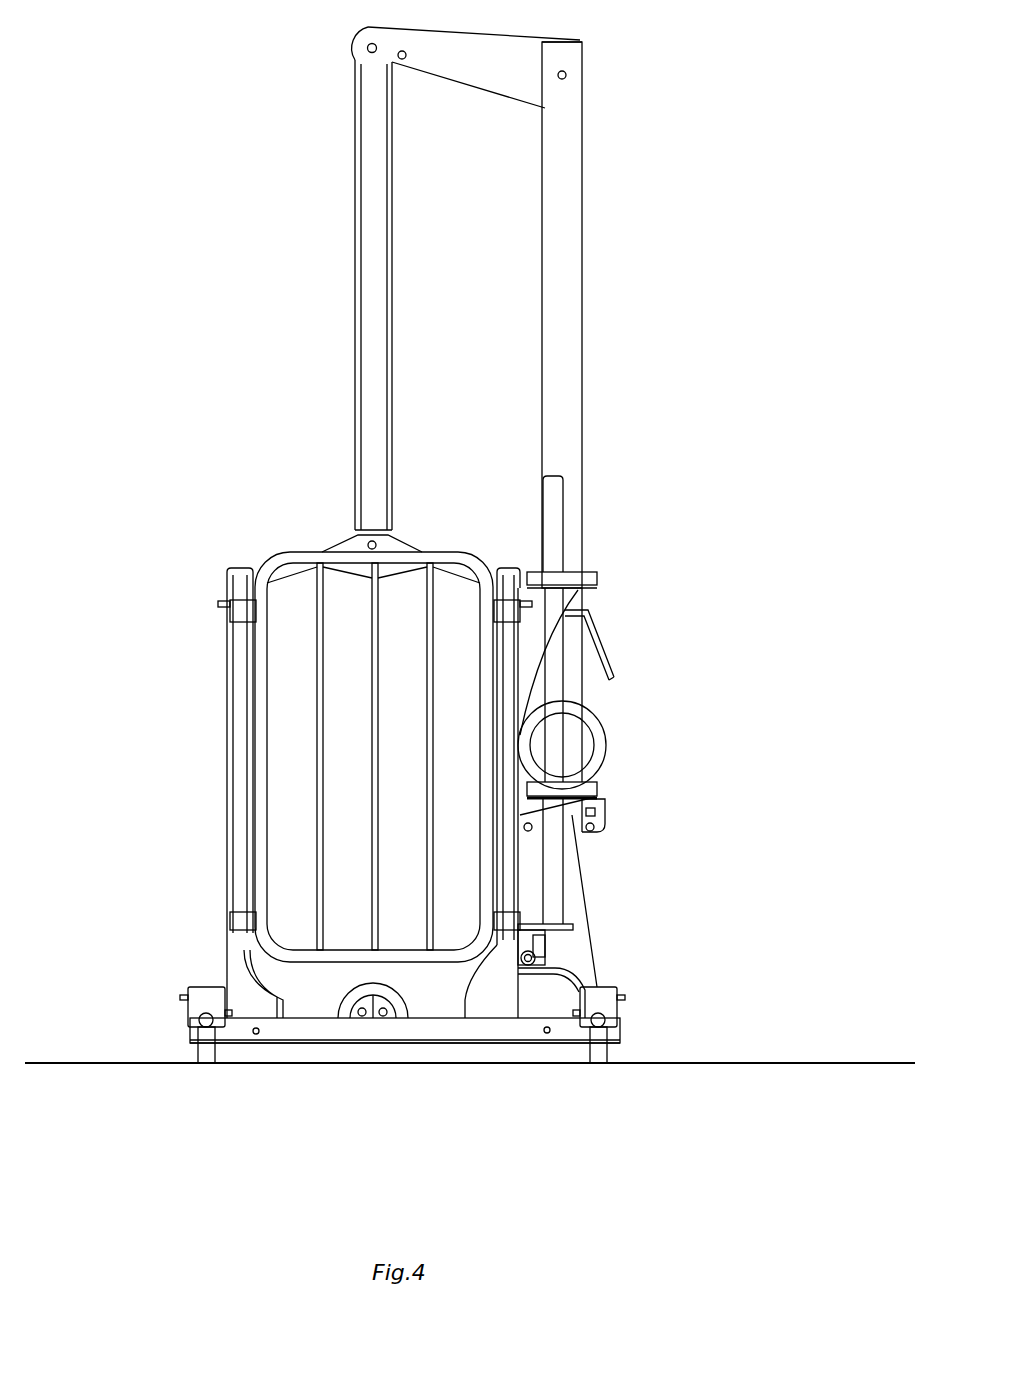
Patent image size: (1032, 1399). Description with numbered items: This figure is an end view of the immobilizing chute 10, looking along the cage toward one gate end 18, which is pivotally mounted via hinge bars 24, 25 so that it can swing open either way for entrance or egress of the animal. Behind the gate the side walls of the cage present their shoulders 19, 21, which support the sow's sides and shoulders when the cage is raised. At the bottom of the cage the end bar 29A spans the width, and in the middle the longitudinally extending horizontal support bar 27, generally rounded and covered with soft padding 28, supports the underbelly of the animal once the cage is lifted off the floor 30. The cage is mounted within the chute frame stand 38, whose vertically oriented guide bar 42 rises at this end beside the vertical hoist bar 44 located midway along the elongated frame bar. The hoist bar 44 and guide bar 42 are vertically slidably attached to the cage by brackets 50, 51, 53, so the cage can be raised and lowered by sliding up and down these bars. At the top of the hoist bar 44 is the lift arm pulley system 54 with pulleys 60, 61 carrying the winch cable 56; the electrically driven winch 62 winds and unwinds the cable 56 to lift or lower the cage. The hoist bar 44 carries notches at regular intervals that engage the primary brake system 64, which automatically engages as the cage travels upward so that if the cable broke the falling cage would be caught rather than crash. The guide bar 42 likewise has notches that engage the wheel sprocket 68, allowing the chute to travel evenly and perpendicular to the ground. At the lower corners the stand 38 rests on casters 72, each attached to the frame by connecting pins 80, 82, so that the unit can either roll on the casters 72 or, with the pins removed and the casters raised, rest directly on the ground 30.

The immobilizing chute 10 is at (135, 222).
The gate end 18 is at (232, 578).
The shoulder 19 is at (497, 985).
The shoulder 21 is at (258, 975).
The hinge bar 24 is at (500, 736).
The hinge bar 25 is at (228, 680).
The horizontal support bar 27 is at (365, 1002).
The soft padding 28 is at (395, 1000).
The end bar 29A is at (442, 1000).
The floor 30 is at (715, 1063).
The chute frame stand 38 is at (300, 1035).
The vertical guide bar 42 is at (563, 496).
The vertical hoist bar 44 is at (585, 100).
The bracket 50 is at (597, 578).
The bracket 51 is at (582, 925).
The bracket 53 is at (598, 792).
The lift arm pulley system 54 is at (485, 48).
The winch cable 56 is at (357, 170).
The pulley 60 is at (355, 45).
The pulley 61 is at (585, 68).
The electrically driven winch 62 is at (605, 748).
The primary brake system 64 is at (612, 658).
The wheel sprocket 68 is at (545, 952).
The caster 72 is at (205, 1050).
The connecting pin 80 is at (188, 995).
The connecting pin 82 is at (188, 1016).